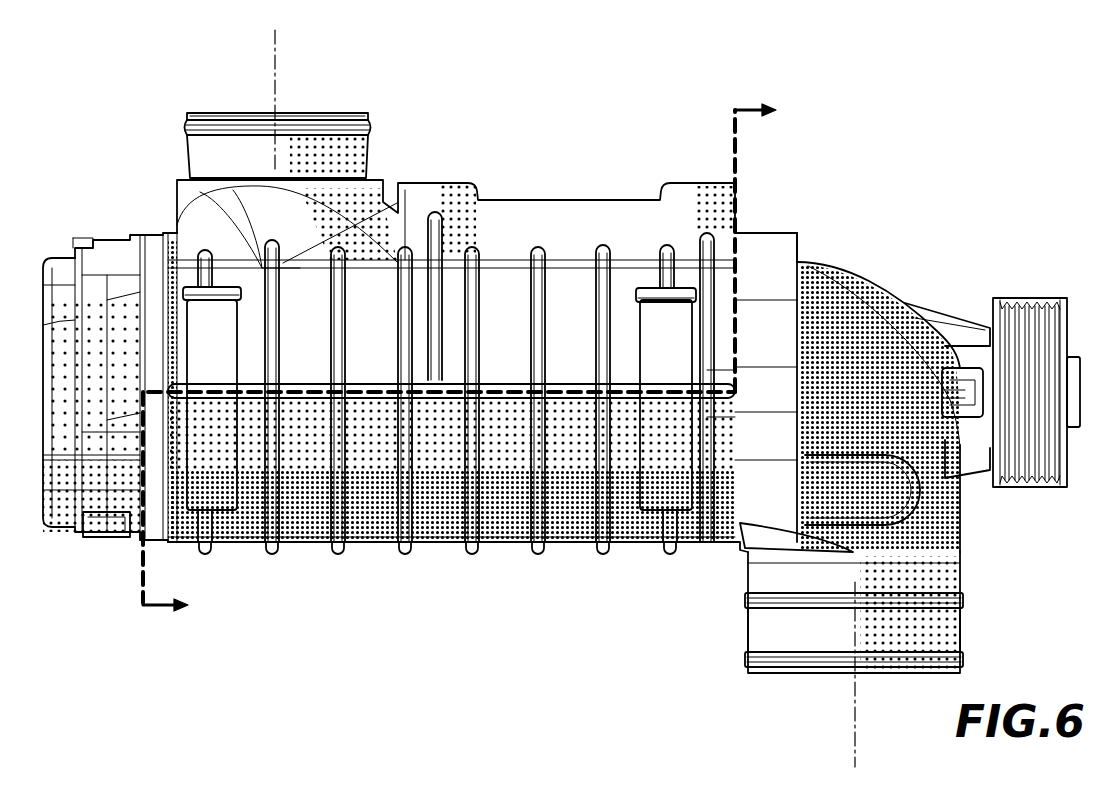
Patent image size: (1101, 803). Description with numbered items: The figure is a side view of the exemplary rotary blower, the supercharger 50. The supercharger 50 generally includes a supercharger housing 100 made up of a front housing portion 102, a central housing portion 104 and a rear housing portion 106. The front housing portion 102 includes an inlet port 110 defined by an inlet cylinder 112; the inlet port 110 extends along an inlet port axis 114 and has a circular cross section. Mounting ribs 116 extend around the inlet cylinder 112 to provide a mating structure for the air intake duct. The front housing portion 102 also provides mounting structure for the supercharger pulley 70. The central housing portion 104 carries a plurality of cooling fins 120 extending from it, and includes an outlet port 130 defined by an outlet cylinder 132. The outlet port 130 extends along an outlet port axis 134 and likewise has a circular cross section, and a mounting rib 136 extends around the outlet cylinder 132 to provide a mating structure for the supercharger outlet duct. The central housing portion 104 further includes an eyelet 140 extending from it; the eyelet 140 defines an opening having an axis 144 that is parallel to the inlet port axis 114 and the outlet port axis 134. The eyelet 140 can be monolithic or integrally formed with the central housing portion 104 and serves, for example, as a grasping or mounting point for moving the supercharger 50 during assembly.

The supercharger 50 is at (724, 71).
The supercharger pulley 70 is at (1040, 300).
The supercharger housing 100 is at (482, 390).
The front housing portion 102 is at (857, 283).
The central housing portion 104 is at (567, 529).
The rear housing portion 106 is at (97, 553).
The inlet port 110 is at (864, 659).
The inlet cylinder 112 is at (950, 628).
The inlet port axis 114 is at (855, 718).
The mounting ribs 116 is at (963, 597).
The cooling fins 120 is at (410, 554).
The outlet port 130 is at (340, 113).
The outlet cylinder 132 is at (363, 153).
The outlet port axis 134 is at (276, 72).
The mounting rib 136 is at (185, 128).
The eyelet 140 is at (500, 383).
The axis 144 is at (492, 318).